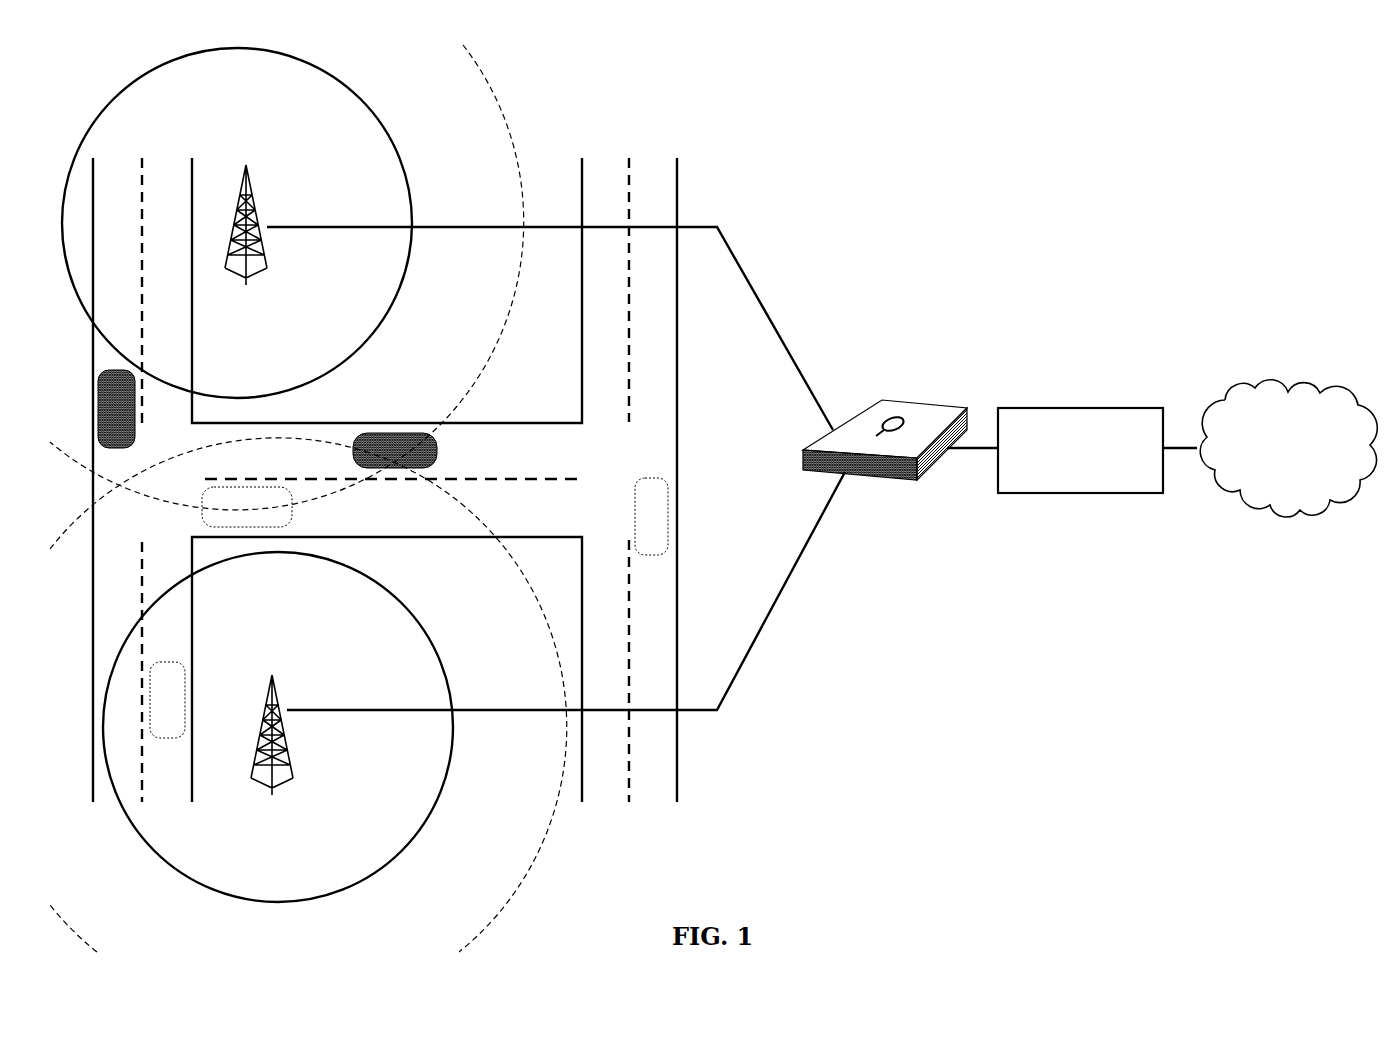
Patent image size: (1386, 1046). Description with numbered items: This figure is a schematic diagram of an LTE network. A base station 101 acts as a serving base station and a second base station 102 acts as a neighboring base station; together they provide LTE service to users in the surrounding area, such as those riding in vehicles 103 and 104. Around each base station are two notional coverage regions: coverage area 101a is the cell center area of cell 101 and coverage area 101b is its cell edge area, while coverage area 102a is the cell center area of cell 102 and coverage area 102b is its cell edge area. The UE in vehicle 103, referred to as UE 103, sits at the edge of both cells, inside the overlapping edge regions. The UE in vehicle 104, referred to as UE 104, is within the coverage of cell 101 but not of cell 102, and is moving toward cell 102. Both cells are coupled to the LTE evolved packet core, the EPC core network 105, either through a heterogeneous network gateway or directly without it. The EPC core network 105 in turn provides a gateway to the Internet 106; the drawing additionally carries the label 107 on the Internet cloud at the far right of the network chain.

The base station 101 is at (260, 193).
The coverage area of cell 101 101a is at (405, 170).
The coverage area of cell 101 101b is at (508, 128).
The second base station 102 is at (287, 695).
The coverage area of cell 102 102a is at (450, 682).
The coverage area of cell 102 102b is at (515, 553).
The vehicle / UE 103 is at (397, 437).
The vehicle / UE 104 is at (135, 390).
The EPC core network 105 is at (950, 397).
The Internet 106 is at (1087, 398).
The Internet 107 is at (1295, 375).